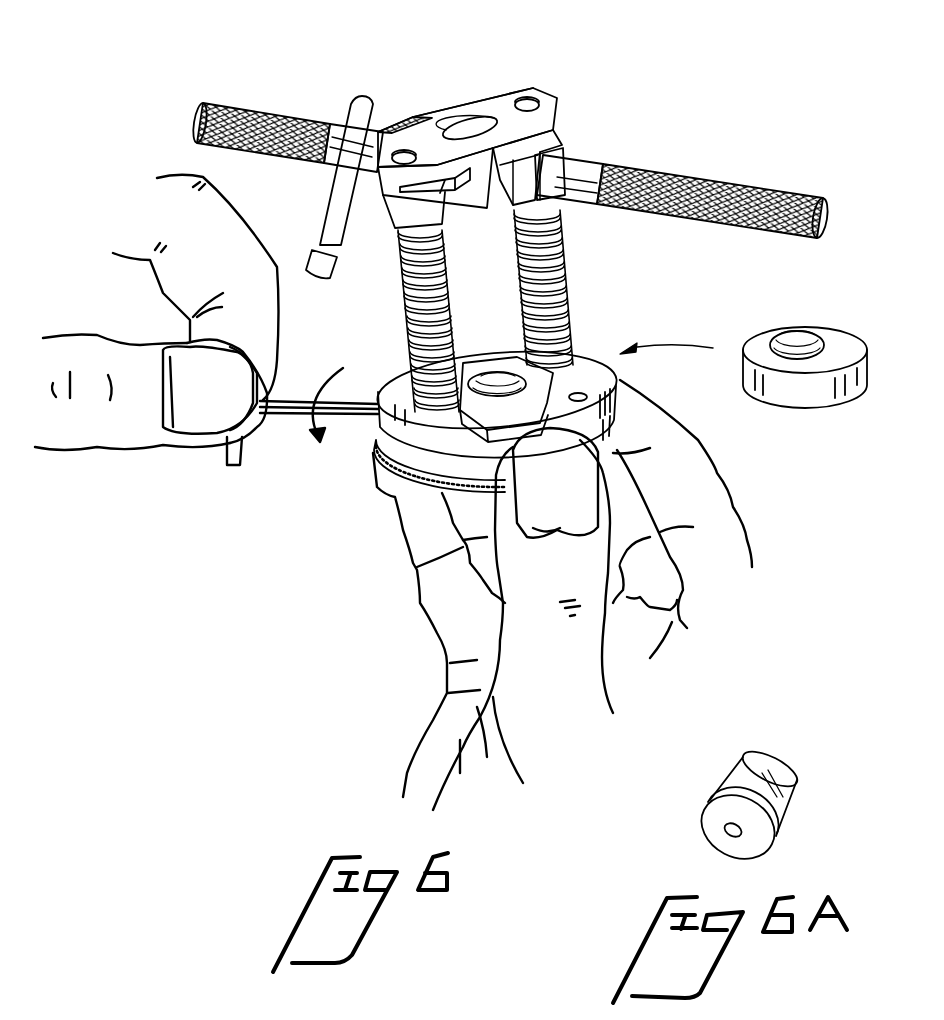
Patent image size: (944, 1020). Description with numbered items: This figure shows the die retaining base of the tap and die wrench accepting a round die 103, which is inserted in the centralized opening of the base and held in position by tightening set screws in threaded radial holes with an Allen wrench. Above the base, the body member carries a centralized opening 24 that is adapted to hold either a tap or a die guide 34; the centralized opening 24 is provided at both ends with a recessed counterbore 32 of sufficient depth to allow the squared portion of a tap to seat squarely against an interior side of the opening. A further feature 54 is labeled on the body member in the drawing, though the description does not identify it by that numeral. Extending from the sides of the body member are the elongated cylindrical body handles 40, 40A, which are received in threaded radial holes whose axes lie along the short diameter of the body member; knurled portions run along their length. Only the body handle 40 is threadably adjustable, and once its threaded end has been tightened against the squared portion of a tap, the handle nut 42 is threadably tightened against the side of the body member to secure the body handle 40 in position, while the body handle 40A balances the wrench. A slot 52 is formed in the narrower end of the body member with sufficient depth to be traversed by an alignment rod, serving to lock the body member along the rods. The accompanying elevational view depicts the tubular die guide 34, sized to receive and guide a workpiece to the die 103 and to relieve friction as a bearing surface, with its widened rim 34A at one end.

In FIG. 6, the centralized opening 24 is at (470, 130).
In FIG. 6, the recessed counterbore 32 is at (500, 100).
In FIG. 6A, the die guide 34 is at (723, 777).
In FIG. 6A, the widened rim 34A is at (777, 843).
In FIG. 6, the body handle 40 is at (252, 107).
In FIG. 6, the body handle 40A is at (720, 180).
In FIG. 6, the handle nut 42 is at (563, 138).
In FIG. 6, the slot 52 is at (367, 250).
In FIG. 6, the hole 54 is at (443, 190).
In FIG. 6, the round die 103 is at (853, 296).